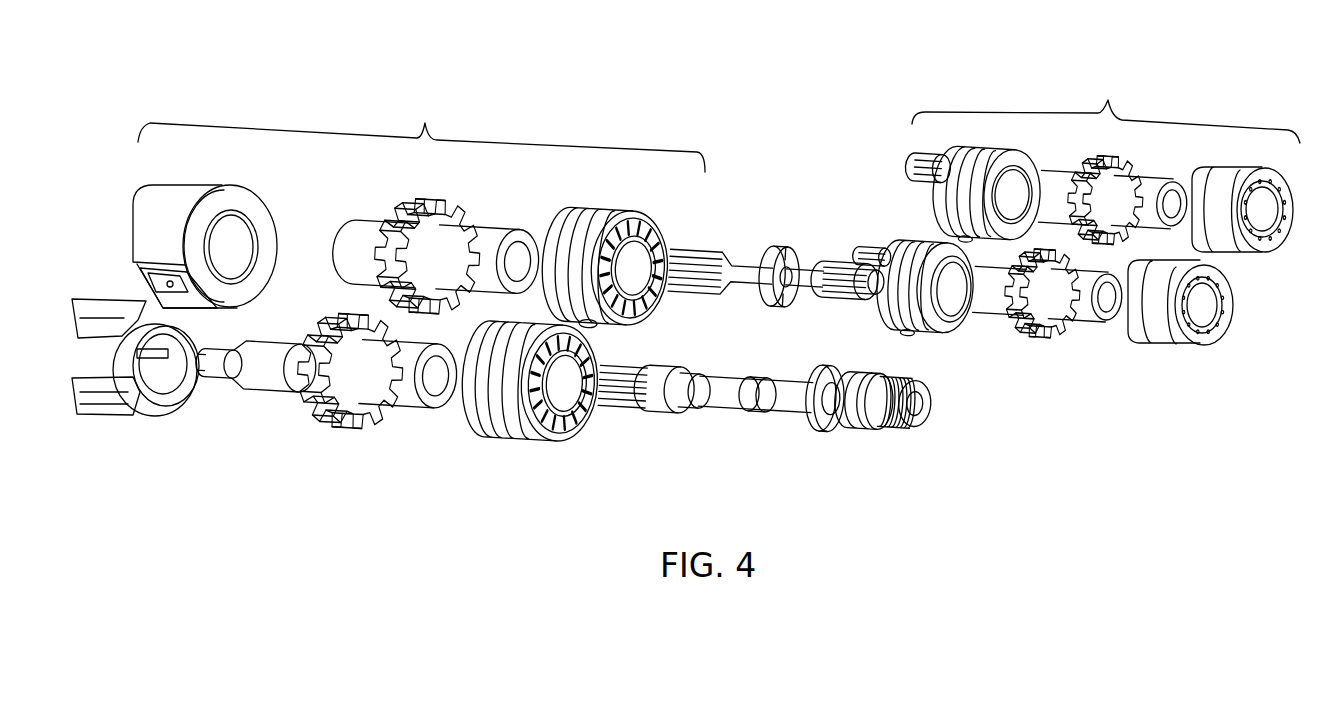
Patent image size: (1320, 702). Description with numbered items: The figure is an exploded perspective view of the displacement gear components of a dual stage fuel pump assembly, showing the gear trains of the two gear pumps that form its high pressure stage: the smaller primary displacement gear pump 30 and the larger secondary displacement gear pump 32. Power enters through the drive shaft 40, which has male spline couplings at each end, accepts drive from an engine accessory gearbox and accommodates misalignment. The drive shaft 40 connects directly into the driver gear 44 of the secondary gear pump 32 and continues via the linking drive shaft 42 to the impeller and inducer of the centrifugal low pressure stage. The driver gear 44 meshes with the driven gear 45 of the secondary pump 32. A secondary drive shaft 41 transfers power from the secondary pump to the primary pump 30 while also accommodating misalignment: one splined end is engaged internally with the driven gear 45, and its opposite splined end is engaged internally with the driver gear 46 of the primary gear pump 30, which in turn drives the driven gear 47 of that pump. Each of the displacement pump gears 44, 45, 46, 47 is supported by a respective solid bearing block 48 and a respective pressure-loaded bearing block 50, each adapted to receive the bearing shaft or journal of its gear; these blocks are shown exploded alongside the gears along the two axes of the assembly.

The primary displacement gear pump 30 is at (1108, 112).
The secondary displacement gear pump 32 is at (425, 123).
The drive shaft 40 is at (718, 408).
The secondary drive shaft 41 is at (813, 267).
The linking drive shaft 42 is at (248, 380).
The driver gear 44 is at (340, 427).
The driven gear 45 is at (450, 200).
The driver gear 46 is at (1047, 337).
The driven gear 47 is at (1137, 163).
The solid bearing block 48 is at (98, 307).
The pressure-loaded bearing block 50 is at (530, 452).